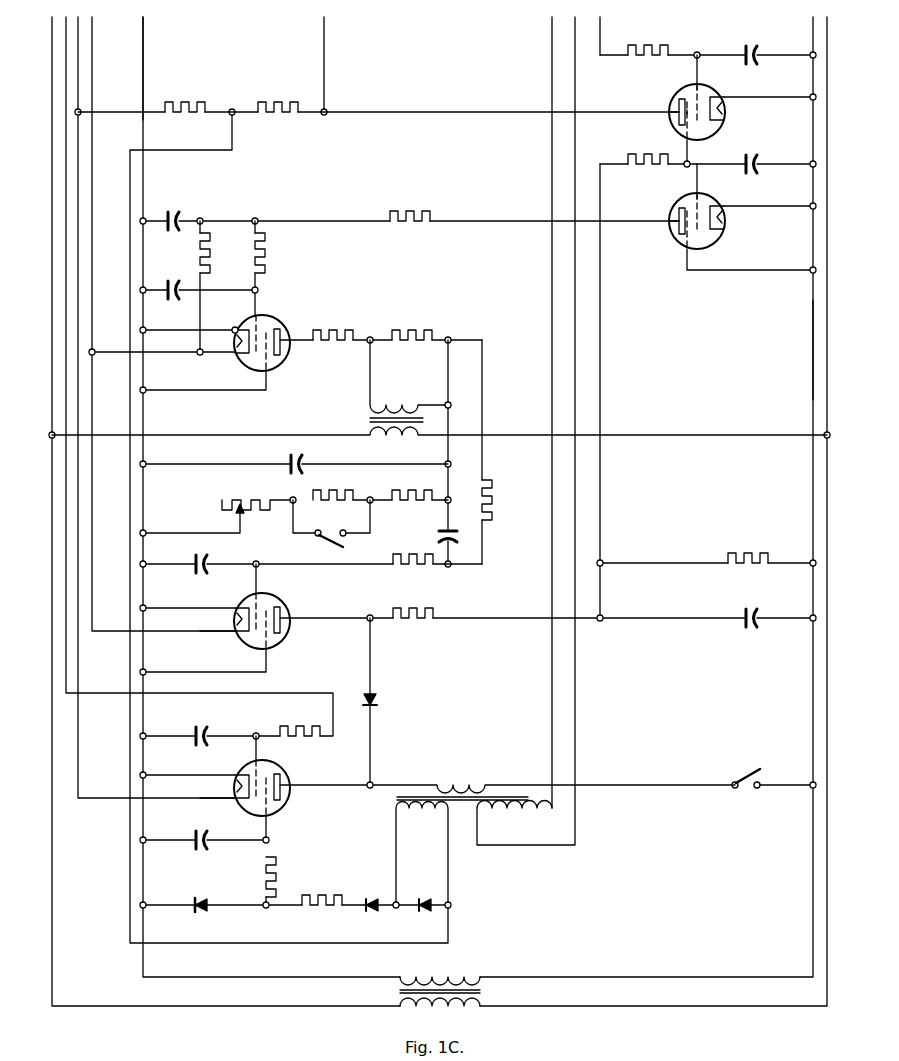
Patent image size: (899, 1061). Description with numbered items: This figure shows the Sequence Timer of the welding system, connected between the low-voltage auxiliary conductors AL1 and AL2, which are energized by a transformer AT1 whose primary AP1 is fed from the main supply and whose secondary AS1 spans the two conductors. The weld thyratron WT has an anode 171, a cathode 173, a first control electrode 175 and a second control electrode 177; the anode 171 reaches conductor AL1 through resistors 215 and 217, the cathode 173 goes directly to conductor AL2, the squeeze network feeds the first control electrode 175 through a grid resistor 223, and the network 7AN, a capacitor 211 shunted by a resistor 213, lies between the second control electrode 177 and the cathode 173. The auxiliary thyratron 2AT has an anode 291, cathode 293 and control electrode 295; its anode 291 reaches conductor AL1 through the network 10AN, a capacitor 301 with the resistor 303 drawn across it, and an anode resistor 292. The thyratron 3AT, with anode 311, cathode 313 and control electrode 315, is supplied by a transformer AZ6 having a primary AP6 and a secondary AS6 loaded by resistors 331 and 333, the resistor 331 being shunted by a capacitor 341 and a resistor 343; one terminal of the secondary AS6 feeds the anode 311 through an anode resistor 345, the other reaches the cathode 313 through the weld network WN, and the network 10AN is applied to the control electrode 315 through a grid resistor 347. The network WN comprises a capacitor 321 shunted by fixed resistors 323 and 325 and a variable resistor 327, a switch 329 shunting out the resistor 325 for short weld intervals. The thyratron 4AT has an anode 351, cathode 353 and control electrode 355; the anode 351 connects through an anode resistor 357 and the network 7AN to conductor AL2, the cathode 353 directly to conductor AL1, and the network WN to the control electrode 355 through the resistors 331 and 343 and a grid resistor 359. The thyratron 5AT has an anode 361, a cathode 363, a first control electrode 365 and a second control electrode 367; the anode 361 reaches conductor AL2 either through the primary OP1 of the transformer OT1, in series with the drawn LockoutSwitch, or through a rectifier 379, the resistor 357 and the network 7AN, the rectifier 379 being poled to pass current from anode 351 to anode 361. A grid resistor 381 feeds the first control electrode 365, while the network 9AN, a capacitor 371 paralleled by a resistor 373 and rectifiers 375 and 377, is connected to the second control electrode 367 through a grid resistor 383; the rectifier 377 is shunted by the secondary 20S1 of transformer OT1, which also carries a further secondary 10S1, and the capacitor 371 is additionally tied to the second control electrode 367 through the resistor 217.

The resistor 217 is at (178, 103).
The resistor 215 is at (265, 103).
The grid resistor 223 is at (648, 46).
The resistor 213 is at (745, 555).
The capacitor 211 is at (748, 629).
The anode 171 is at (672, 120).
The cathode 173 is at (712, 128).
The first control electrode 175 is at (705, 86).
The second control electrode 177 is at (684, 88).
The anode 291 is at (672, 229).
The cathode 293 is at (712, 238).
The control electrode 295 is at (705, 197).
The capacitor 301 is at (175, 213).
The resistor 303 is at (214, 255).
The grid resistor 347 is at (268, 258).
The anode resistor 292 is at (407, 212).
The control electrode 315 is at (251, 325).
The cathode 313 is at (240, 360).
The anode 311 is at (282, 352).
The anode resistor 345 is at (330, 331).
The resistor 333 is at (413, 331).
The resistor 331 is at (445, 366).
The resistor 343 is at (494, 500).
The capacitor 321 is at (290, 460).
The variable resistor 327 is at (245, 497).
The fixed resistor 325 is at (343, 500).
The fixed resistor 323 is at (403, 500).
The switch 329 is at (336, 541).
The capacitor 341 is at (438, 536).
The grid resistor 359 is at (415, 572).
The anode resistor 357 is at (421, 612).
The control electrode 355 is at (268, 597).
The cathode 353 is at (240, 640).
The anode 351 is at (283, 628).
The rectifier 379 is at (380, 702).
The grid resistor 381 is at (296, 727).
The first control electrode 365 is at (250, 772).
The cathode 363 is at (245, 808).
The anode 361 is at (283, 793).
The second control electrode 367 is at (280, 812).
The grid resistor 383 is at (265, 870).
The capacitor 371 is at (203, 911).
The resistor 373 is at (323, 890).
The rectifier 375 is at (372, 895).
The rectifier 377 is at (425, 897).
The weld thyratron WT is at (668, 104).
The auxiliary thyratron 2AT is at (684, 200).
The auxiliary thyratron 3AT is at (272, 322).
The auxiliary thyratron 4AT is at (285, 600).
The auxiliary thyratron 5AT is at (285, 767).
The auxiliary conductor AL1 is at (143, 47).
The auxiliary conductor AL2 is at (813, 362).
The auxiliary network 10AN is at (196, 261).
The weld network WN is at (329, 493).
The auxiliary network 7AN is at (741, 598).
The auxiliary network 9AN is at (351, 933).
The secondary AS6 is at (409, 376).
The transformer AZ6 is at (370, 420).
The primary AP6 is at (439, 443).
The primary OP1 is at (462, 782).
The transformer OT1 is at (395, 800).
The secondary 20S1 is at (422, 815).
The transformer secondary winding 10S1 is at (500, 820).
The transformer secondary winding AS1 is at (448, 983).
The transformer AT1 is at (480, 991).
The primary AP1 is at (445, 1012).
The lockout switch LockoutSwitch is at (748, 780).